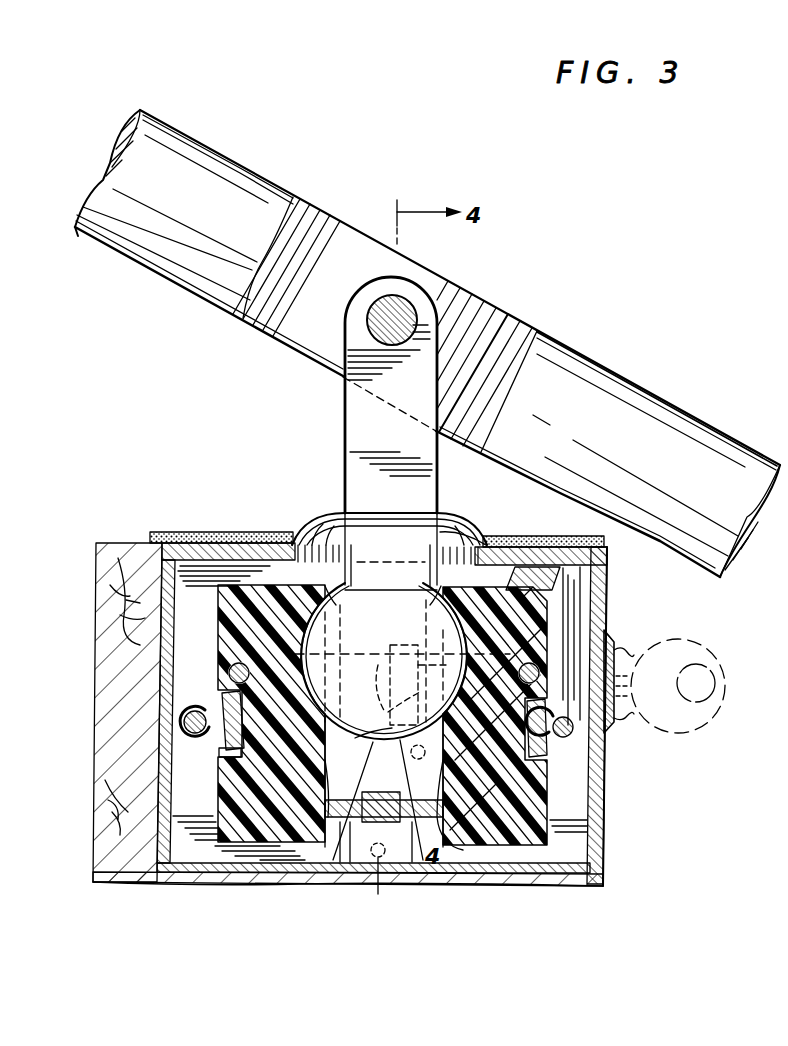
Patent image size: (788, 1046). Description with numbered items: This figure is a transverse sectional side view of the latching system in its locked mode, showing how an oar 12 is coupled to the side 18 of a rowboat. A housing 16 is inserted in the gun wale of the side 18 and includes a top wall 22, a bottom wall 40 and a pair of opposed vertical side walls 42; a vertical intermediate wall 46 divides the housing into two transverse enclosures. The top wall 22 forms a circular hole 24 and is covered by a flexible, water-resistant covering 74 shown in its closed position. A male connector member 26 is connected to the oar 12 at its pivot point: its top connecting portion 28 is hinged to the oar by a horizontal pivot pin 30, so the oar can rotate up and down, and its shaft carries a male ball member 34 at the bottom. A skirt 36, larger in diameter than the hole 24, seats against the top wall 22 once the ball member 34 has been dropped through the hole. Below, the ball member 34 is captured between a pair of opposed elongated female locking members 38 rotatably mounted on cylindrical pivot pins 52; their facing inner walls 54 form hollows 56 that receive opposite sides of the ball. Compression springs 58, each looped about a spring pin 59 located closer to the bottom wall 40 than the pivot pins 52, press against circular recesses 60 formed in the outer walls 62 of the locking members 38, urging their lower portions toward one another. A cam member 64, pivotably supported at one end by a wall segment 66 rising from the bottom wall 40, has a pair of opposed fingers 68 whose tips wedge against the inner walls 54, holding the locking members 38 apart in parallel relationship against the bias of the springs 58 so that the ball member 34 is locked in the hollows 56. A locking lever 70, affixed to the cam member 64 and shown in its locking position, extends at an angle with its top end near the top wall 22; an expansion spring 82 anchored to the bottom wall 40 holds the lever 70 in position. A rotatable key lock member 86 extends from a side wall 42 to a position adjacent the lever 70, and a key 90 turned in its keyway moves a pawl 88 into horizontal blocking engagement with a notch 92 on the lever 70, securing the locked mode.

The oar 12 is at (593, 376).
The housing 16 is at (612, 835).
The side of the rowboat 18 is at (104, 560).
The top wall 22 is at (598, 556).
The circular hole 24 is at (458, 545).
The male connector member 26 is at (304, 433).
The top connecting portion 28 is at (348, 480).
The horizontal pivot pin 30 is at (401, 305).
The male ball member 34 is at (372, 651).
The skirt 36 is at (441, 526).
The female locking members 38 is at (230, 615).
The bottom wall 40 is at (589, 866).
The side walls 42 is at (162, 676).
The intermediate wall 46 is at (427, 623).
The pivot pins 52 is at (224, 671).
The inner walls 54 is at (326, 749).
The hollows 56 is at (328, 586).
The compression springs 58 is at (220, 704).
The spring pins 59 is at (211, 738).
The circular recesses 60 is at (217, 776).
The outer walls 62 is at (217, 812).
The cam member 64 is at (384, 799).
The wall segment 66 is at (362, 838).
The fingers 68 is at (312, 792).
The locking lever 70 is at (522, 565).
The flexible water-resistant covering 74 is at (243, 540).
The expansion spring 82 is at (389, 729).
The key lock member 86 is at (609, 736).
The pawl 88 is at (413, 650).
The key 90 is at (686, 650).
The notch 92 is at (382, 690).